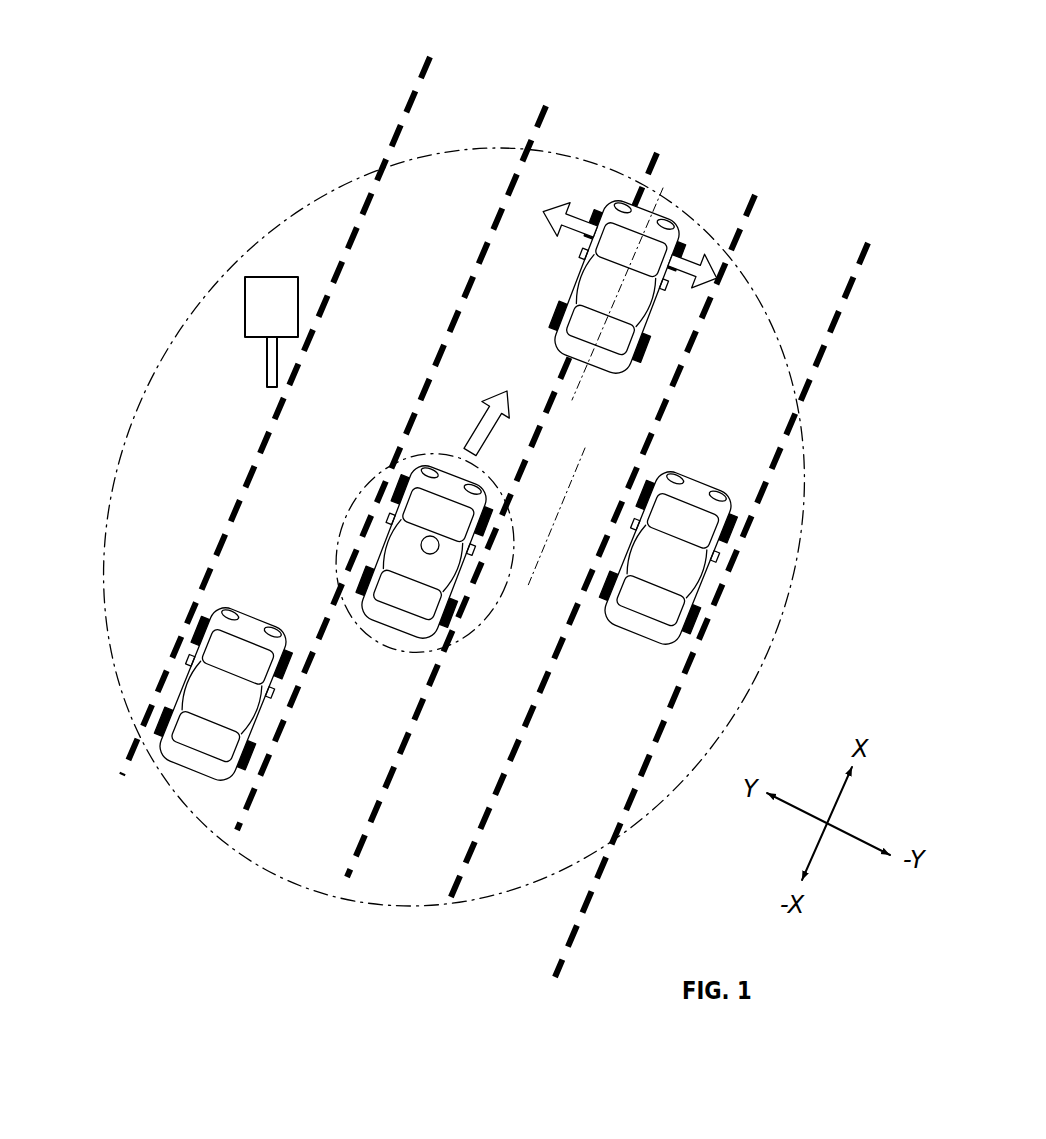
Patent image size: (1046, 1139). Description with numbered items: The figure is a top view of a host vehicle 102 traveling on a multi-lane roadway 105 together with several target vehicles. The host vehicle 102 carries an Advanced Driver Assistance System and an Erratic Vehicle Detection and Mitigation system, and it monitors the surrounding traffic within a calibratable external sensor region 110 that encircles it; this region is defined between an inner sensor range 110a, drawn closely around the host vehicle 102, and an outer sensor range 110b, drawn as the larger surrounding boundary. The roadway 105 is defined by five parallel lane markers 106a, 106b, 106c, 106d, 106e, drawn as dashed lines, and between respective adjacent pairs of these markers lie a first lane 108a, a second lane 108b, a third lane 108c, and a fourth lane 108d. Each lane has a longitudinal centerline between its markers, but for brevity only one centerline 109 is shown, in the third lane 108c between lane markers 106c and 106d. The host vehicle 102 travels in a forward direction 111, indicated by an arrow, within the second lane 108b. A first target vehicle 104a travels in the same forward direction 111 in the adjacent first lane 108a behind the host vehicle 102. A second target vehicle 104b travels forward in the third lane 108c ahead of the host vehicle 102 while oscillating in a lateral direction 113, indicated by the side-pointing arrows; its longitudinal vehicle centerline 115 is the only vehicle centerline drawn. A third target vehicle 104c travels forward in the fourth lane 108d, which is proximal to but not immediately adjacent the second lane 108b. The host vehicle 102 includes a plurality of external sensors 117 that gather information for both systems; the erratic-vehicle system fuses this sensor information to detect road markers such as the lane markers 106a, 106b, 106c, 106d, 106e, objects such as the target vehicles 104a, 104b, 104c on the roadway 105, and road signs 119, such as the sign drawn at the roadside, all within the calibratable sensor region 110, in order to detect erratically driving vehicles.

The host vehicle 102 is at (410, 568).
The first target vehicle 104a is at (210, 694).
The second target vehicle 104b is at (627, 300).
The third target vehicle 104c is at (680, 560).
The multi-lane roadway 105 is at (233, 188).
The lane marker 106a is at (123, 776).
The lane marker 106b is at (237, 831).
The lane marker 106c is at (347, 878).
The lane marker 106d is at (444, 910).
The lane marker 106e is at (560, 976).
The first lane 108a is at (503, 128).
The second lane 108b is at (600, 173).
The third lane 108c is at (702, 205).
The fourth lane 108d is at (800, 253).
The centerline 109 is at (548, 567).
The calibratable external sensor region 110 is at (160, 452).
The inner sensor range 110a is at (418, 452).
The outer sensor range 110b is at (204, 296).
The forward direction 111 is at (468, 398).
The lateral direction 113 is at (690, 298).
The centerline 115 is at (582, 393).
The external sensors 117 is at (432, 554).
The road signs 119 is at (270, 290).